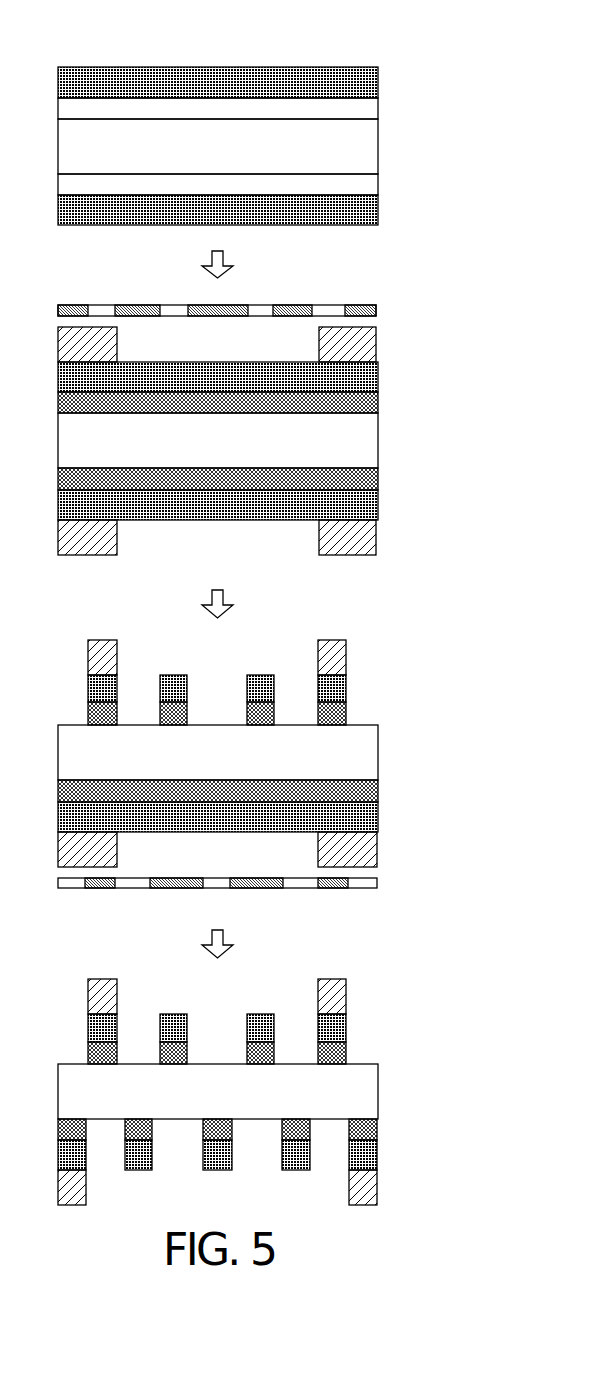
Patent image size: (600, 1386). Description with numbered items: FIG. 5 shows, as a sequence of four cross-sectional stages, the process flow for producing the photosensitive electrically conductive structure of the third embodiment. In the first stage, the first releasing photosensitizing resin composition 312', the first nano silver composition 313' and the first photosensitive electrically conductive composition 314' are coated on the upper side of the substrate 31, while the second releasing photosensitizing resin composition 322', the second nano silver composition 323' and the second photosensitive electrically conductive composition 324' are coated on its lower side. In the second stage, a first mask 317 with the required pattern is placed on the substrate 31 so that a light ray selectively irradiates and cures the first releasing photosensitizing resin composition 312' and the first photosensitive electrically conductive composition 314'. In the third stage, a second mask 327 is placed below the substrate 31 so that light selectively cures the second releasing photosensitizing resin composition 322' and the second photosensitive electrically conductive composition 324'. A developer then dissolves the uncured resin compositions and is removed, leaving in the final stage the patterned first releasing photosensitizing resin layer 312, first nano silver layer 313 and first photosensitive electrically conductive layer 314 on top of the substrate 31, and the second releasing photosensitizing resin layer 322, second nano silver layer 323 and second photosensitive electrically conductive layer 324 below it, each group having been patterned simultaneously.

The substrate 31 is at (358, 148).
The first releasing photosensitizing resin composition 312' is at (257, 259).
The first nano silver composition 313' is at (257, 230).
The first photosensitive electrically conductive composition 314' is at (257, 345).
The first mask 317 is at (377, 308).
The second releasing photosensitizing resin composition 322' is at (257, 493).
The second nano silver composition 323' is at (257, 516).
The second photosensitive electrically conductive composition 324' is at (257, 693).
The second mask 327 is at (377, 883).
The first releasing photosensitizing resin layer 312 is at (270, 880).
The first nano silver layer 313 is at (270, 855).
The first photosensitive electrically conductive layer 314 is at (270, 826).
The second releasing photosensitizing resin layer 322 is at (255, 1136).
The second nano silver layer 323 is at (255, 1159).
The second photosensitive electrically conductive layer 324 is at (255, 1188).